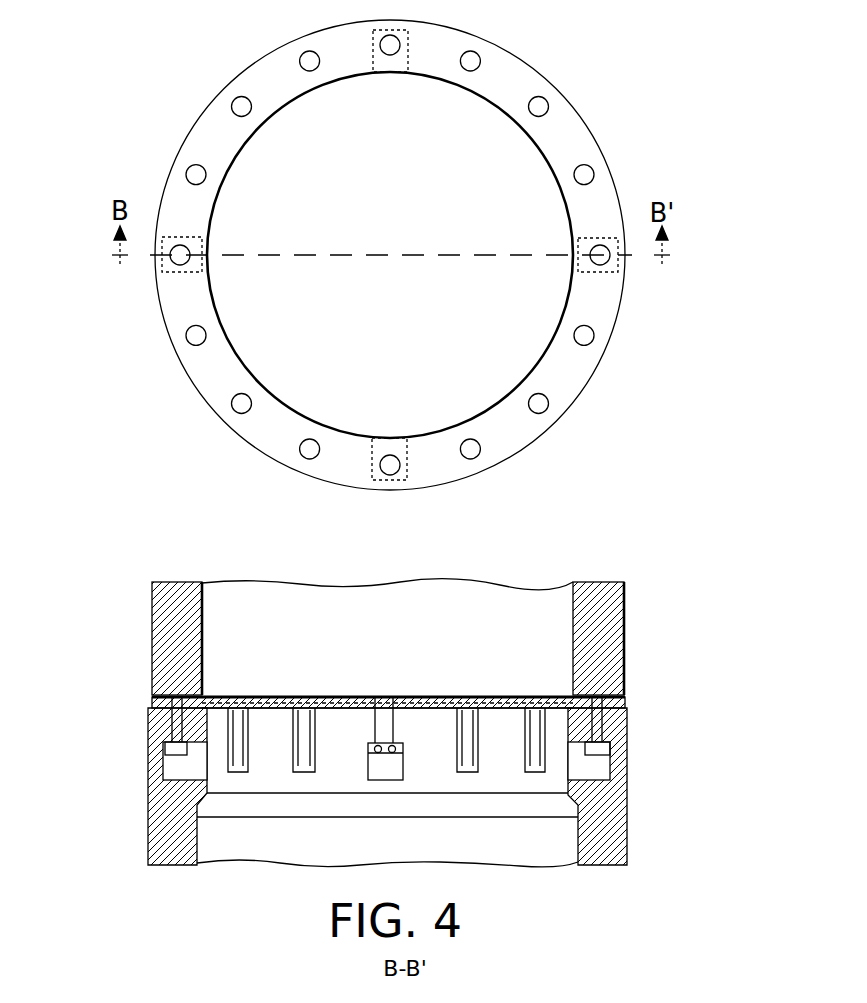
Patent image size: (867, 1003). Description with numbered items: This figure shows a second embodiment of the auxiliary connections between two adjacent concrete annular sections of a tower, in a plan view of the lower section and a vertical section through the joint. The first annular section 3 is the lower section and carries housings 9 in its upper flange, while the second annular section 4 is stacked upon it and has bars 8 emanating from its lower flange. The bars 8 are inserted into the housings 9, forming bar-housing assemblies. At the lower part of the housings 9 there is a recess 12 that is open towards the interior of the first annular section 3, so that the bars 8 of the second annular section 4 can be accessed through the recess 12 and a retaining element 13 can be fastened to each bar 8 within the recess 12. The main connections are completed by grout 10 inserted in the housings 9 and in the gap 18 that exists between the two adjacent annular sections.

The first annular section 3 is at (168, 108).
The second annular section 4 is at (170, 648).
The bars 8 is at (152, 697).
The housings 9 is at (188, 342).
The grout 10 is at (338, 697).
The recess 12 is at (402, 468).
The retaining element 13 is at (163, 752).
The gap 18 is at (213, 700).